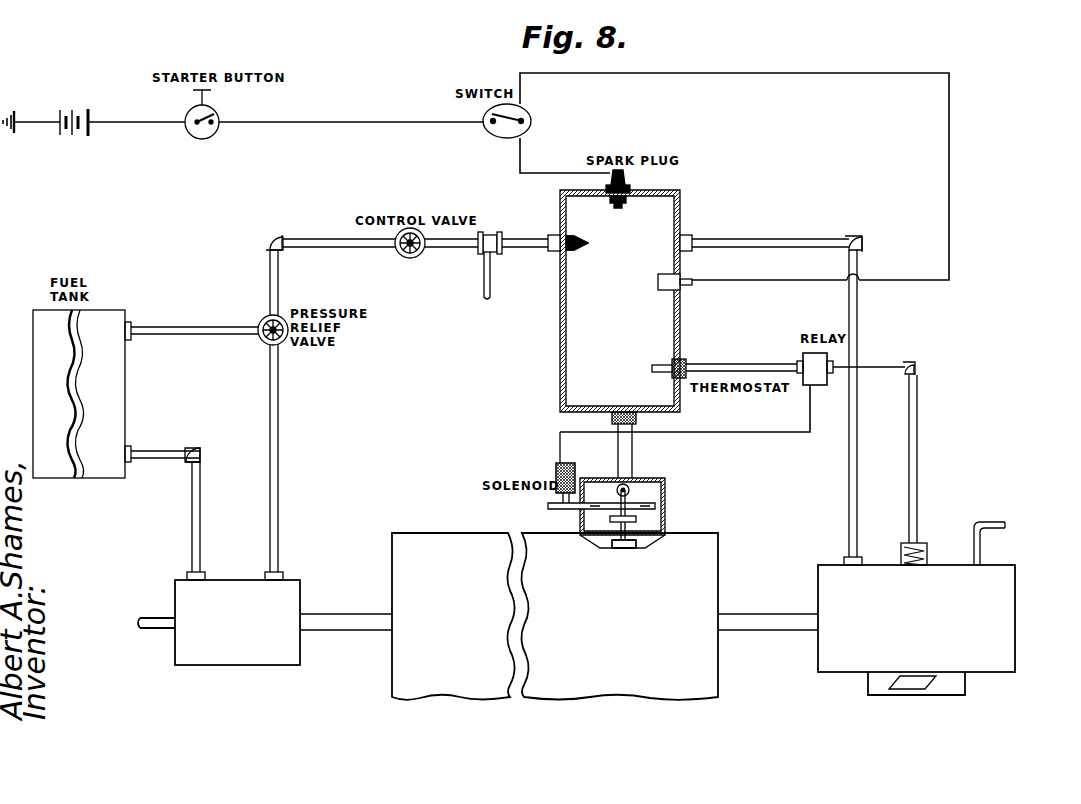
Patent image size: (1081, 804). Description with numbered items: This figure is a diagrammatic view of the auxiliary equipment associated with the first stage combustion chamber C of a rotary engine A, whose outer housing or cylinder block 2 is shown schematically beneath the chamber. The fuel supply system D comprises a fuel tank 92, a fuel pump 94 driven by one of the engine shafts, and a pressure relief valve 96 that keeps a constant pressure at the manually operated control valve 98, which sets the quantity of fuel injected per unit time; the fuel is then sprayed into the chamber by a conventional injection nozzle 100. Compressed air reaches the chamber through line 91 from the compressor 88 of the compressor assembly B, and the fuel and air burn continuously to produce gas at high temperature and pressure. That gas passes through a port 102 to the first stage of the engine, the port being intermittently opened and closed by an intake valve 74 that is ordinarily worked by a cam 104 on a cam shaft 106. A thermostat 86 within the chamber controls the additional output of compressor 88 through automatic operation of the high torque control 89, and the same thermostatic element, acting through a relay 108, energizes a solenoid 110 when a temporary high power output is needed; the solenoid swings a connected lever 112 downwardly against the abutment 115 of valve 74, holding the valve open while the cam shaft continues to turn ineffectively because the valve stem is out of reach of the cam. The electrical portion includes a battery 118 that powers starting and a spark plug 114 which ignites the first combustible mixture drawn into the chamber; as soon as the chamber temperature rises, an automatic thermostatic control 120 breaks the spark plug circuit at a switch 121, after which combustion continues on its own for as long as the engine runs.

The outer housing or cylinder block 2 is at (708, 575).
The intake valve 74 is at (618, 541).
The thermostat 86 is at (688, 366).
The compressor 88 is at (1000, 575).
The high torque control 89 is at (924, 542).
The line 91 is at (860, 316).
The fuel tank 92 is at (117, 318).
The fuel pump 94 is at (288, 592).
The pressure relief valve 96 is at (262, 343).
The control valve 98 is at (405, 257).
The injection nozzle 100 is at (562, 262).
The port 102 is at (633, 451).
The cam 104 is at (665, 498).
The cam shaft 106 is at (629, 488).
The relay 108 is at (806, 358).
The solenoid 110 is at (556, 470).
The lever 112 is at (600, 510).
The spark plug 114 is at (628, 180).
The abutment 115 is at (636, 519).
The battery 118 is at (60, 118).
The automatic thermostatic control 120 is at (682, 286).
The switch 121 is at (486, 134).
The rotary engine A is at (390, 699).
The compressor assembly B is at (815, 669).
The first stage combustion chamber C is at (560, 316).
The fuel supply system D is at (30, 309).